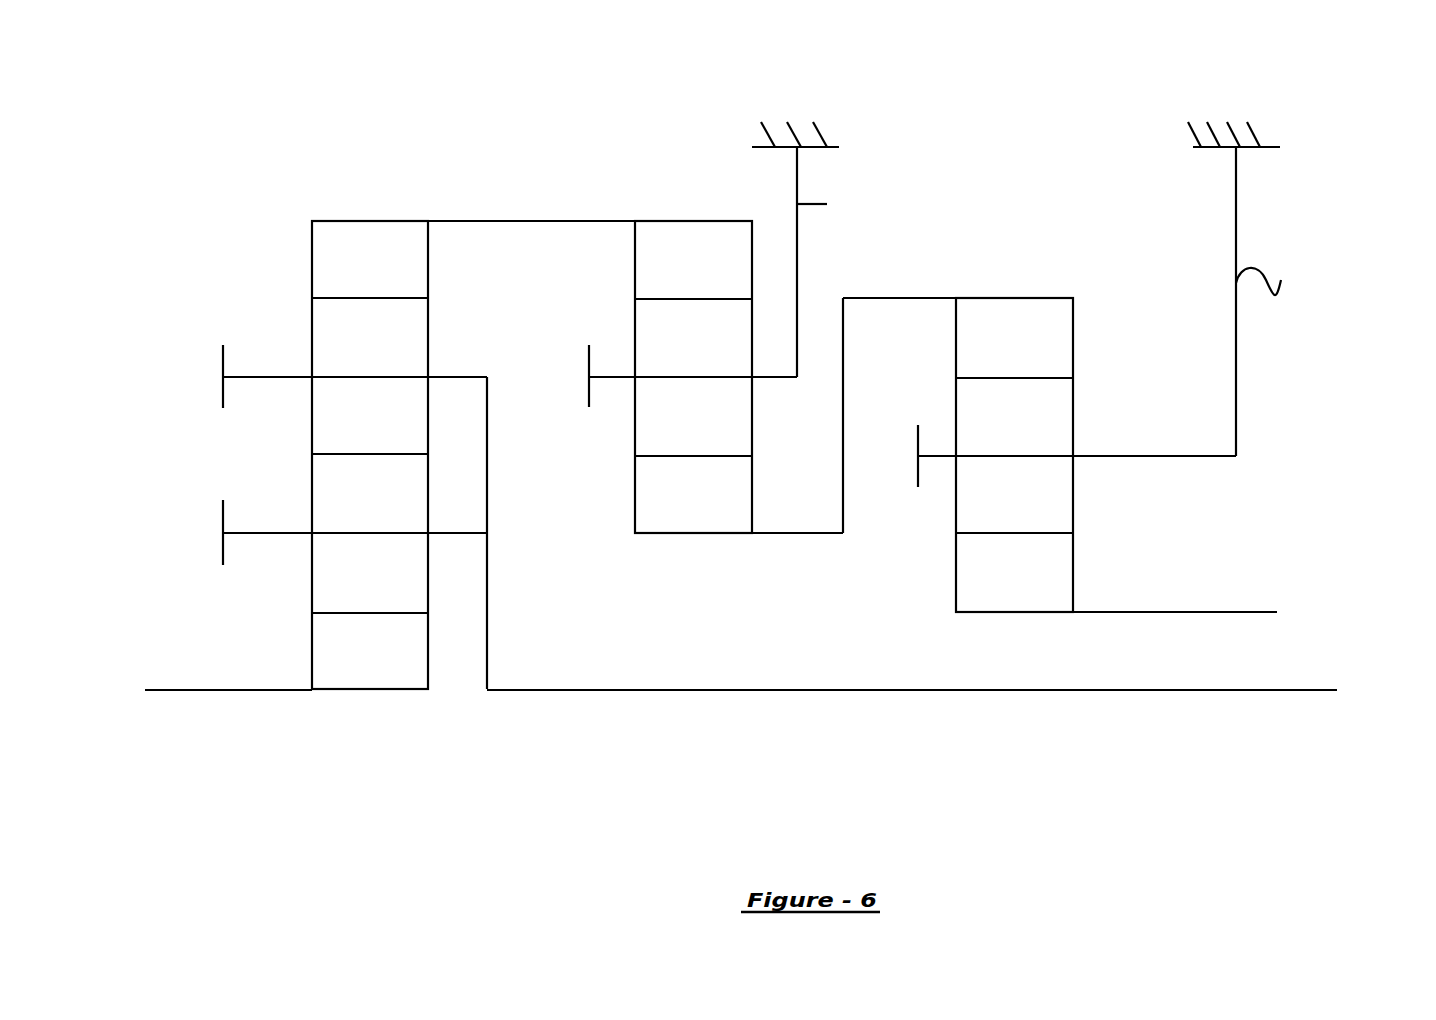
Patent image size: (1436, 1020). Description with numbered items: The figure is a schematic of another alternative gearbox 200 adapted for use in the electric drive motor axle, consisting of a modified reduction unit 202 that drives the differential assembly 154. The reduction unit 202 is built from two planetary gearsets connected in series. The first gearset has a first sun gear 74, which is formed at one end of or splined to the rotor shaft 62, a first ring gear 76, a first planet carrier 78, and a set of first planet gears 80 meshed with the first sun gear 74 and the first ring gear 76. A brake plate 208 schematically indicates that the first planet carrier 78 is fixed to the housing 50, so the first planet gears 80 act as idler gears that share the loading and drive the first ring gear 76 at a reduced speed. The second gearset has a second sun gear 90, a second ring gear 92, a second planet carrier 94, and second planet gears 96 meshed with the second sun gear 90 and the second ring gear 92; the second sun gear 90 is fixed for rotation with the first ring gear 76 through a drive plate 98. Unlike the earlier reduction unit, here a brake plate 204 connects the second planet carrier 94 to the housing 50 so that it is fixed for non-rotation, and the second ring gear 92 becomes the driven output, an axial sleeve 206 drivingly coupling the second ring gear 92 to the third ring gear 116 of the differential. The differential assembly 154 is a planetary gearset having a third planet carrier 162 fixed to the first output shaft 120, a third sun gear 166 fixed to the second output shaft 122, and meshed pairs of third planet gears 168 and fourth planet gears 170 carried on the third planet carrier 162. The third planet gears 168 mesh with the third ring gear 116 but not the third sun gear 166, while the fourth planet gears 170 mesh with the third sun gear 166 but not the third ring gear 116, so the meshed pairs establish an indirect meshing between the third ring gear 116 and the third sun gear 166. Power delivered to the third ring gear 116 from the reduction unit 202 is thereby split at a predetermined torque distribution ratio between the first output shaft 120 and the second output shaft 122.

The housing assembly 50 is at (838, 127).
The rotor shaft 62 is at (1157, 610).
The first sun gear 74 is at (1055, 571).
The first ring gear 76 is at (1052, 340).
The first planet carrier 78 is at (1110, 448).
The first planet gears 80 is at (980, 395).
The second sun gear 90 is at (656, 486).
The second ring gear 92 is at (706, 232).
The second planet carrier 94 is at (584, 362).
The second planet gears 96 is at (652, 314).
The drive plate 98 is at (843, 428).
The third ring gear 116 is at (379, 240).
The first output shaft 120 is at (832, 690).
The second output shaft 122 is at (168, 690).
The differential assembly 154 is at (262, 250).
The third planet carrier 162 is at (492, 477).
The third sun gear 166 is at (330, 636).
The third planet gears 168 is at (408, 330).
The fourth planet gears 170 is at (330, 480).
The gearbox 200 is at (1315, 237).
The reduction unit 202 is at (950, 273).
The brake plate 204 is at (838, 262).
The axial sleeve 206 is at (522, 215).
The brake plate 208 is at (1282, 273).